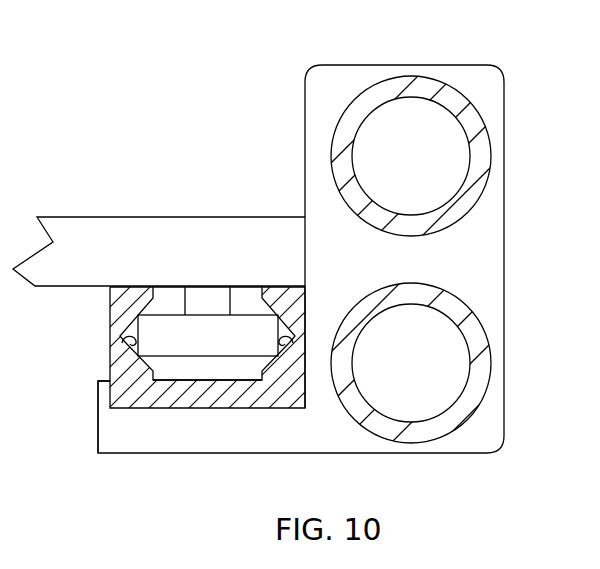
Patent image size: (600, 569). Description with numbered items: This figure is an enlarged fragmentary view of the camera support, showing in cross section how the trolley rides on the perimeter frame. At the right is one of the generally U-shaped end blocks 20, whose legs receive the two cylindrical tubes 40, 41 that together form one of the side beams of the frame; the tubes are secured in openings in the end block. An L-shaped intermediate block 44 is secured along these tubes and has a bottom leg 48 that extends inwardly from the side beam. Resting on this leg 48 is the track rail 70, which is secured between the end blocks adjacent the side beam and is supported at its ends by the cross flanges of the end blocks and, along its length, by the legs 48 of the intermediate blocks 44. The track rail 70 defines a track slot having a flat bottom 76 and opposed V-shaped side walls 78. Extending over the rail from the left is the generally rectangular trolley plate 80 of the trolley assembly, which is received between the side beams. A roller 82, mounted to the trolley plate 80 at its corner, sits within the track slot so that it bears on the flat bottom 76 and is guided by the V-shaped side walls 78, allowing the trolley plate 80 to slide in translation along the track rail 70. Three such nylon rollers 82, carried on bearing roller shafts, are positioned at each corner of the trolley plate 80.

The end block 20 is at (543, 177).
The tube 40 is at (403, 77).
The tube 41 is at (427, 442).
The intermediate block 44 is at (347, 65).
The bottom leg 48 is at (233, 435).
The track rail 70 is at (115, 304).
The flat bottom 76 is at (205, 377).
The V-shaped side wall 78 is at (120, 342).
The trolley plate 80 is at (237, 233).
The roller 82 is at (250, 327).